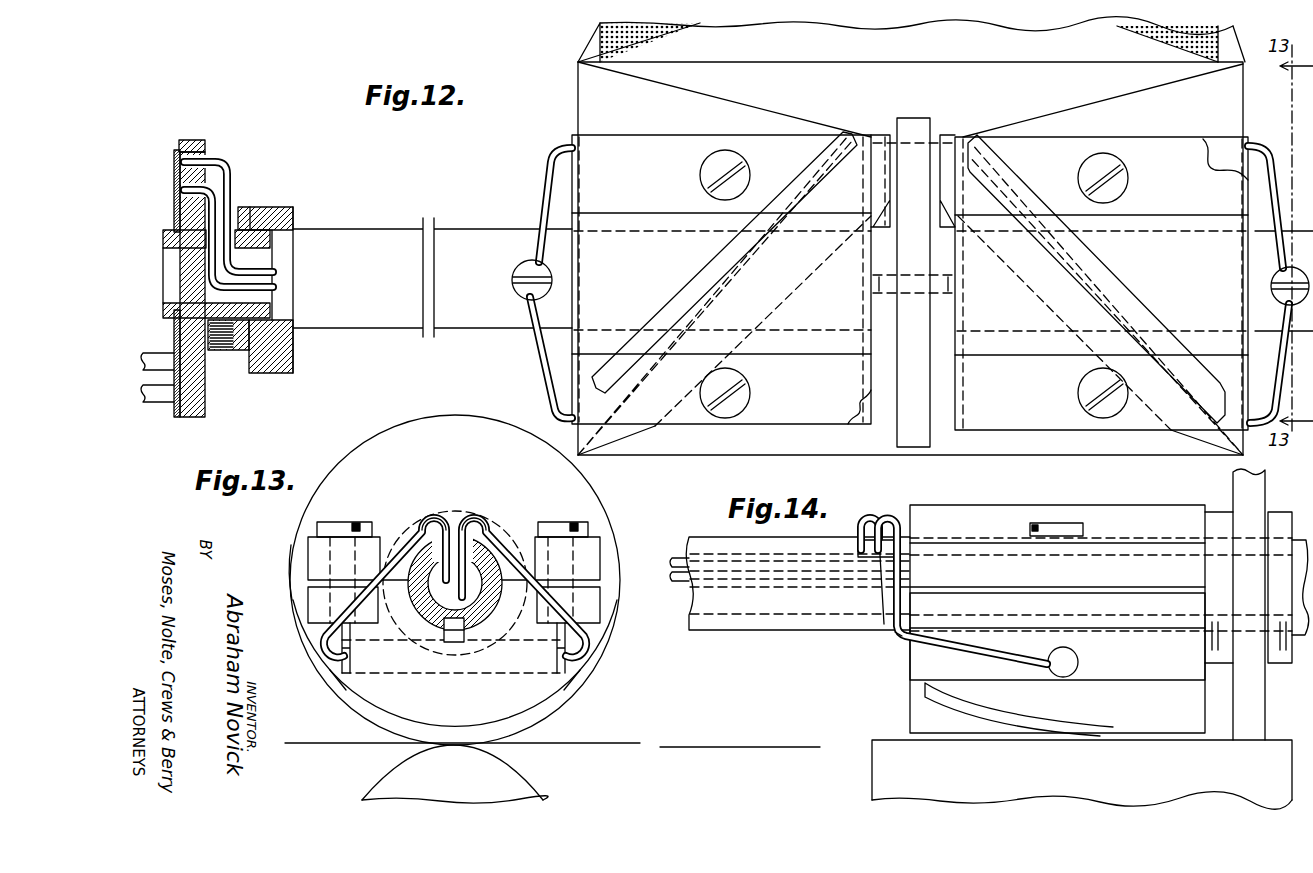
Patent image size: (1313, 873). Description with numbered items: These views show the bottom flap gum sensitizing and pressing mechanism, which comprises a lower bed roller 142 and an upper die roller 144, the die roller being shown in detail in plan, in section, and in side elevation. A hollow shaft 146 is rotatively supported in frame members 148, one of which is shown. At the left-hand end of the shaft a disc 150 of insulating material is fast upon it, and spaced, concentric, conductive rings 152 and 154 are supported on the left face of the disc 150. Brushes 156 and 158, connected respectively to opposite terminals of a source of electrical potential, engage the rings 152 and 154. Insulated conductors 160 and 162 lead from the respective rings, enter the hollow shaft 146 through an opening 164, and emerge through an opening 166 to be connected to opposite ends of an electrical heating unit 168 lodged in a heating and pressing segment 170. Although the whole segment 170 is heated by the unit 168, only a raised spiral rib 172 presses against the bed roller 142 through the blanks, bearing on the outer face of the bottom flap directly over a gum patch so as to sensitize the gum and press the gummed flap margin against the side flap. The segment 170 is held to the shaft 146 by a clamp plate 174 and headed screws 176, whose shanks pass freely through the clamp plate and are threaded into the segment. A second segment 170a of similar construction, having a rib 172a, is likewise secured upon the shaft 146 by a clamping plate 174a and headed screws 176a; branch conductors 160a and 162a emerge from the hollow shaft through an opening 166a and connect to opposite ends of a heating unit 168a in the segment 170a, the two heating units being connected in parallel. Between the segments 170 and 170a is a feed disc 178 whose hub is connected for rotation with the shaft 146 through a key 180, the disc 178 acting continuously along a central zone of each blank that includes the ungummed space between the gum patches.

In FIG. 13, the lower bed roller 142 is at (388, 778).
In FIG. 14, the lower bed roller 142 is at (1040, 754).
In FIG. 12, the upper die roller 144 is at (713, 119).
In FIG. 13, the upper die roller 144 is at (322, 461).
In FIG. 14, the upper die roller 144 is at (886, 649).
In FIG. 12, the hollow shaft 146 is at (165, 233).
In FIG. 13, the hollow shaft 146 is at (428, 612).
In FIG. 12, the frame members 148 is at (277, 364).
In FIG. 12, the disc of insulating material 150 is at (199, 140).
In FIG. 12, the conductive ring 152 is at (178, 152).
In FIG. 12, the conductive ring 154 is at (175, 192).
In FIG. 12, the brush 156 is at (151, 393).
In FIG. 12, the brush 158 is at (150, 351).
In FIG. 12, the insulated conductor 160 is at (232, 172).
In FIG. 13, the insulated conductor 160 is at (437, 582).
In FIG. 14, the insulated conductor 160 is at (710, 548).
In FIG. 12, the branch conductor 160a is at (554, 162).
In FIG. 12, the insulated conductor 162 is at (210, 272).
In FIG. 13, the insulated conductor 162 is at (473, 597).
In FIG. 14, the insulated conductor 162 is at (756, 584).
In FIG. 12, the branch conductor 162a is at (545, 368).
In FIG. 12, the opening 164 is at (262, 214).
In FIG. 12, the opening 166 is at (1275, 300).
In FIG. 13, the opening 166 is at (420, 517).
In FIG. 12, the opening 166a is at (530, 262).
In FIG. 13, the electrical heating unit 168 is at (515, 665).
In FIG. 14, the heating unit 168a is at (1074, 660).
In FIG. 12, the heating and pressing segment 170 is at (1232, 139).
In FIG. 13, the heating and pressing segment 170 is at (361, 692).
In FIG. 12, the second segment 170a is at (863, 426).
In FIG. 14, the second segment 170a is at (1118, 606).
In FIG. 12, the raised spiral rib 172 is at (1133, 300).
In FIG. 13, the raised spiral rib 172 is at (372, 716).
In FIG. 12, the rib 172a is at (683, 304).
In FIG. 14, the rib 172a is at (925, 690).
In FIG. 12, the clamp plate 174 is at (1161, 141).
In FIG. 13, the clamp plate 174 is at (375, 537).
In FIG. 12, the clamping plate 174a is at (622, 121).
In FIG. 14, the clamping plate 174a is at (923, 514).
In FIG. 12, the headed screws 176 is at (1078, 162).
In FIG. 13, the headed screws 176 is at (328, 522).
In FIG. 12, the headed screws 176a is at (705, 177).
In FIG. 14, the headed screws 176a is at (1031, 530).
In FIG. 12, the feed disc 178 is at (905, 118).
In FIG. 13, the feed disc 178 is at (292, 556).
In FIG. 14, the feed disc 178 is at (1238, 706).
In FIG. 12, the key 180 is at (885, 297).
In FIG. 14, the key 180 is at (1209, 652).